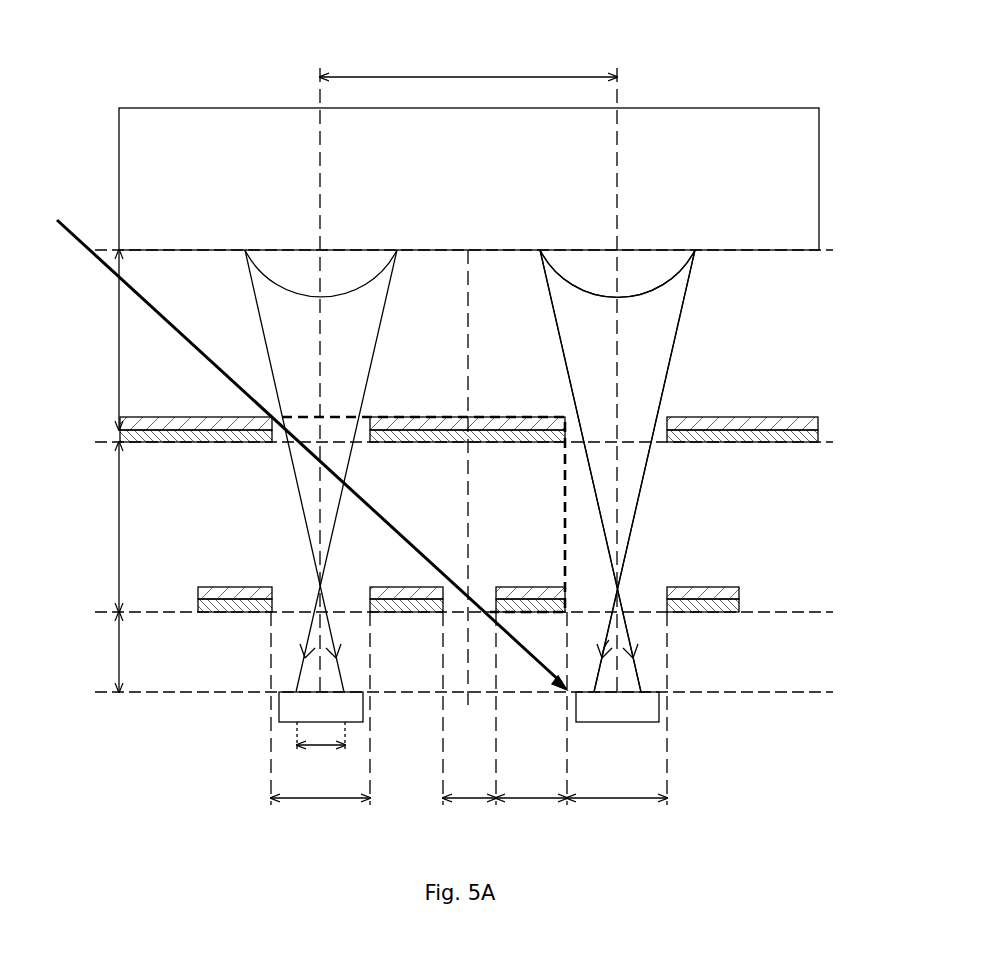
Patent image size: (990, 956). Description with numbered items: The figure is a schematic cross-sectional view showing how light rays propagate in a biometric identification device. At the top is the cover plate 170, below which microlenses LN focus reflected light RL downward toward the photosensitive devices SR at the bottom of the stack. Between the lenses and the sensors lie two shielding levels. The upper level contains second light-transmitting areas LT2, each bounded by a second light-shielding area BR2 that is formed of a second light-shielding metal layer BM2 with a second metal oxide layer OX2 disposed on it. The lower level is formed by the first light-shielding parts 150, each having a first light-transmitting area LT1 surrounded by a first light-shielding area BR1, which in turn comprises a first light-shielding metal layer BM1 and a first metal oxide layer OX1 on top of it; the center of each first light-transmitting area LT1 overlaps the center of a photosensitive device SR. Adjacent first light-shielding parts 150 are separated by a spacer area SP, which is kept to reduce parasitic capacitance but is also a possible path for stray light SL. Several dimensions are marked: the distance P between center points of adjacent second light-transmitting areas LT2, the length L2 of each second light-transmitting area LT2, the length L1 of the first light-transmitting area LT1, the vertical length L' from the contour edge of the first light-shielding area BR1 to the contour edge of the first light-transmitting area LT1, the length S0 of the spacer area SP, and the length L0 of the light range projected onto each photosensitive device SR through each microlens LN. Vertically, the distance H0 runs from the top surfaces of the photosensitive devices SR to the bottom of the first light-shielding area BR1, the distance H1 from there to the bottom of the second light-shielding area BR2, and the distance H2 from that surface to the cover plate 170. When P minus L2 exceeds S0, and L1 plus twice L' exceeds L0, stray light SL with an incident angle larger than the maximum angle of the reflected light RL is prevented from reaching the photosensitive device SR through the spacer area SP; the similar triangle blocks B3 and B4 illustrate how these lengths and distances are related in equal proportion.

The cover plate 170 is at (800, 182).
The microlens LN is at (650, 257).
The reflected light RL is at (688, 293).
The stray light SL is at (85, 246).
The triangle block B3 is at (338, 417).
The triangle block B4 is at (535, 610).
The spacer area SP is at (482, 598).
The photosensitive device SR is at (277, 722).
The second light-transmitting area LT2 is at (632, 427).
The first light-transmitting area LT1 is at (640, 593).
The second metal oxide layer OX2 is at (818, 423).
The second light-shielding metal layer BM2 is at (820, 440).
The second light-shielding area BR2 is at (549, 447).
The first metal oxide layer OX1 is at (739, 590).
The first light-shielding metal layer BM1 is at (717, 606).
The first light-shielding area BR1 is at (588, 615).
The first light-shielding part 150 is at (855, 768).
The distance P is at (468, 63).
The distance H2 is at (99, 340).
The distance H1 is at (99, 527).
The distance H0 is at (99, 652).
The length L0 is at (321, 752).
The length L1 is at (320, 815).
The length L2 is at (617, 815).
The vertical length L' is at (531, 815).
The length S0 is at (469, 815).